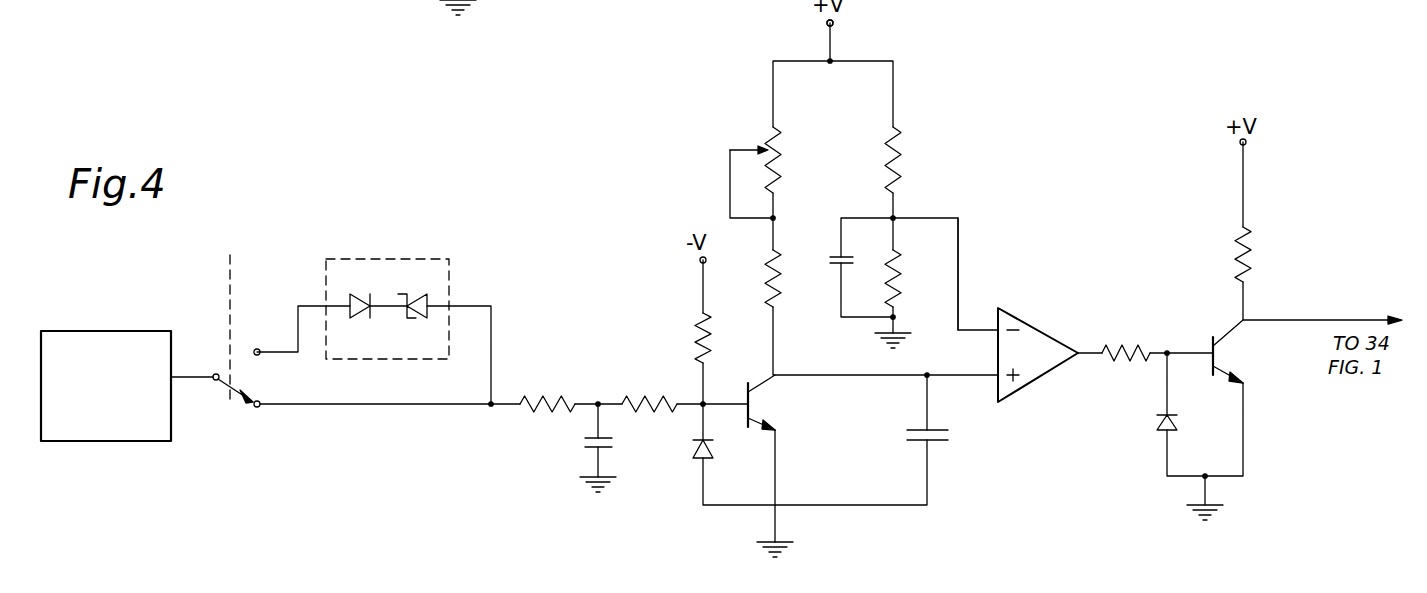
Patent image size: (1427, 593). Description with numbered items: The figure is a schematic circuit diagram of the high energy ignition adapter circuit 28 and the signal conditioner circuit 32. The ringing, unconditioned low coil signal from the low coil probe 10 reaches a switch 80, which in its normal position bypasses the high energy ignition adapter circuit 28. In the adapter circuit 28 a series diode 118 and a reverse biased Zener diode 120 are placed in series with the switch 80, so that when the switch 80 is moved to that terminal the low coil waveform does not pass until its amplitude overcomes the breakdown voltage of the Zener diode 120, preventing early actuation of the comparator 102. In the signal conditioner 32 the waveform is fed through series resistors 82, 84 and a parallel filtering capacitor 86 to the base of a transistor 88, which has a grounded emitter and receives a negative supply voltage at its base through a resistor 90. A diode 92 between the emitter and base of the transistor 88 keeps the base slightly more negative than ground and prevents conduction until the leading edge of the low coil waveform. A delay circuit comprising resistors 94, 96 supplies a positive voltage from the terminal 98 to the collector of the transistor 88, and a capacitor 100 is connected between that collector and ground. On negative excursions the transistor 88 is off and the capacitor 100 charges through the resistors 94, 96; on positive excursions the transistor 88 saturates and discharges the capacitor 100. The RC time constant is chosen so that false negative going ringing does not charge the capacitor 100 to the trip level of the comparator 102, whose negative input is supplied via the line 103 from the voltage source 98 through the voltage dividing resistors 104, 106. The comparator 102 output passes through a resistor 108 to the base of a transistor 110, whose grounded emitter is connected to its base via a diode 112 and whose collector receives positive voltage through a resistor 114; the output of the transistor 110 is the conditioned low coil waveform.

The low coil probe 10 is at (104, 331).
The switch 80 is at (223, 392).
The high energy ignition adapter circuit 28 is at (449, 261).
The diode 118 is at (351, 309).
The Zener diode 120 is at (411, 309).
The resistor 82 is at (538, 398).
The resistor 84 is at (646, 398).
The filtering capacitor 86 is at (583, 444).
The resistor 90 is at (695, 320).
The diode 92 is at (697, 446).
The transistor 88 is at (784, 398).
The resistor 94 is at (784, 153).
The resistor 96 is at (783, 287).
The terminal 98 is at (834, 23).
The voltage dividing resistor 104 is at (905, 143).
The voltage dividing resistor 106 is at (905, 272).
The line 103 is at (962, 258).
The comparator 102 is at (1034, 325).
The resistor 108 is at (1125, 345).
The diode 112 is at (1158, 425).
The transistor 110 is at (1247, 365).
The resistor 114 is at (1259, 252).
The capacitor 100 is at (904, 441).
The signal conditioner circuit 32 is at (953, 464).